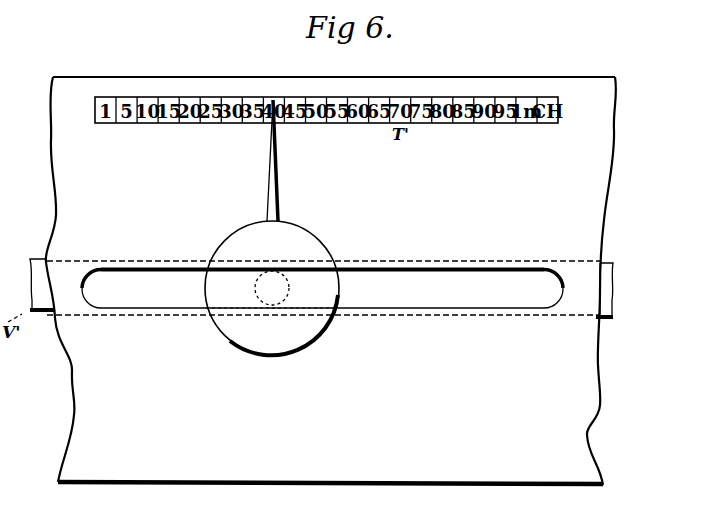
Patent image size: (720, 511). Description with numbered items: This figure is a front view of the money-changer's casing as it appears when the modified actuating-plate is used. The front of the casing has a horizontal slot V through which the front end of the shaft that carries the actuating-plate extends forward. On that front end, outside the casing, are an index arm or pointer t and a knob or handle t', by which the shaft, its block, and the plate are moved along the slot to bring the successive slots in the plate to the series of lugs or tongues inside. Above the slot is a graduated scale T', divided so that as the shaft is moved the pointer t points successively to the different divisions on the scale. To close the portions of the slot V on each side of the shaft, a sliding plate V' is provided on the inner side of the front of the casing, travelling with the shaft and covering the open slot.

The index arm or pointer t is at (281, 160).
The knob or handle t' is at (272, 288).
The graduated scale T' is at (272, 288).
The slot V is at (322, 306).
The sliding plate V' is at (619, 290).